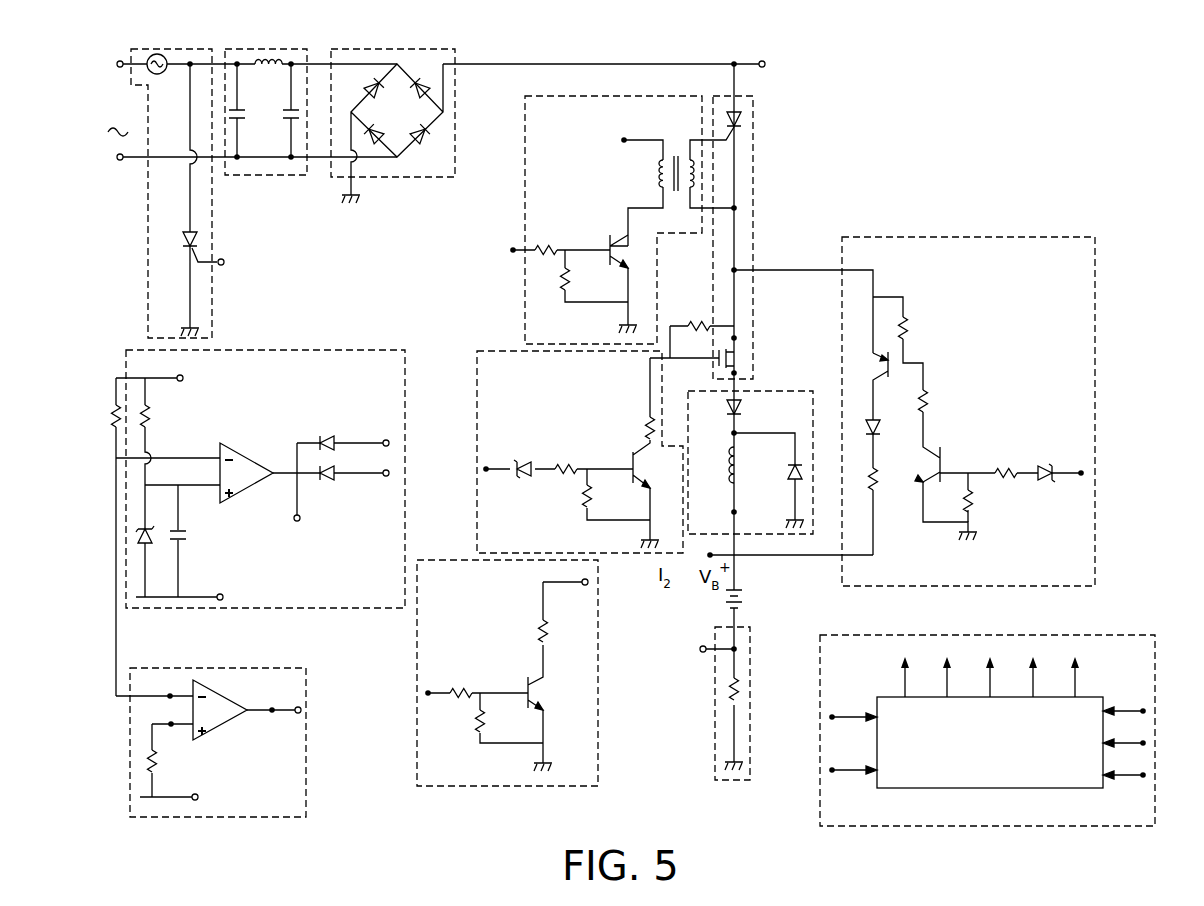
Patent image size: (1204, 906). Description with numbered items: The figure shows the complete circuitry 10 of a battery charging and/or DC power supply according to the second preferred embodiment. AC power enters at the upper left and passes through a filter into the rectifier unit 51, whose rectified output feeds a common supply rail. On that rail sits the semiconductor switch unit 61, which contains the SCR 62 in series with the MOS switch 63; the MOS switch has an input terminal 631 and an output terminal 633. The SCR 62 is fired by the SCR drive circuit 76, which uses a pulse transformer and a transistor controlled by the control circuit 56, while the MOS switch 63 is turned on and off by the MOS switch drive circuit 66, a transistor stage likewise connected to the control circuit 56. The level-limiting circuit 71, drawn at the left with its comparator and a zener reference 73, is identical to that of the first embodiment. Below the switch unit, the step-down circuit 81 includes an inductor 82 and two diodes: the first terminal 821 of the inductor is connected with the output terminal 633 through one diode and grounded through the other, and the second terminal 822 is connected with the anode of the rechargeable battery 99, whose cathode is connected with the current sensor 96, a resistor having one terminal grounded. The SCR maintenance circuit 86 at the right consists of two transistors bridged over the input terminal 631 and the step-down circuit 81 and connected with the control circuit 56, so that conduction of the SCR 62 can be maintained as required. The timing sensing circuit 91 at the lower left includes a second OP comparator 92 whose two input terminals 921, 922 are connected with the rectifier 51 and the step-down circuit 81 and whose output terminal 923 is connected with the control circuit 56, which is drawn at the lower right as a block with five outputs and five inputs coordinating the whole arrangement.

The power supply circuit 10 is at (905, 70).
The rectifier unit 51 is at (428, 50).
The SCR drive circuit 76 is at (657, 96).
The semiconductor switch unit 61 is at (736, 96).
The SCR 62 is at (745, 118).
The input terminal 631 is at (736, 338).
The MOS switch 63 is at (737, 352).
The output terminal 633 is at (736, 373).
The SCR maintenance circuit 86 is at (977, 237).
The MOS switch drive circuit 66 is at (478, 348).
The level-limiting circuit 71 is at (126, 368).
The zener diode 73 is at (134, 538).
The step-down circuit 81 is at (800, 535).
The inductor 82 is at (742, 470).
The first terminal 821 is at (735, 435).
The second terminal 822 is at (735, 514).
The battery 99 is at (720, 600).
The current sensor 96 is at (713, 703).
The control circuit 56 is at (1077, 635).
The timing sensing circuit 91 is at (130, 755).
The second OP comparator 92 is at (238, 696).
The input terminal 921 is at (170, 696).
The input terminal 922 is at (171, 724).
The output terminal 923 is at (272, 710).